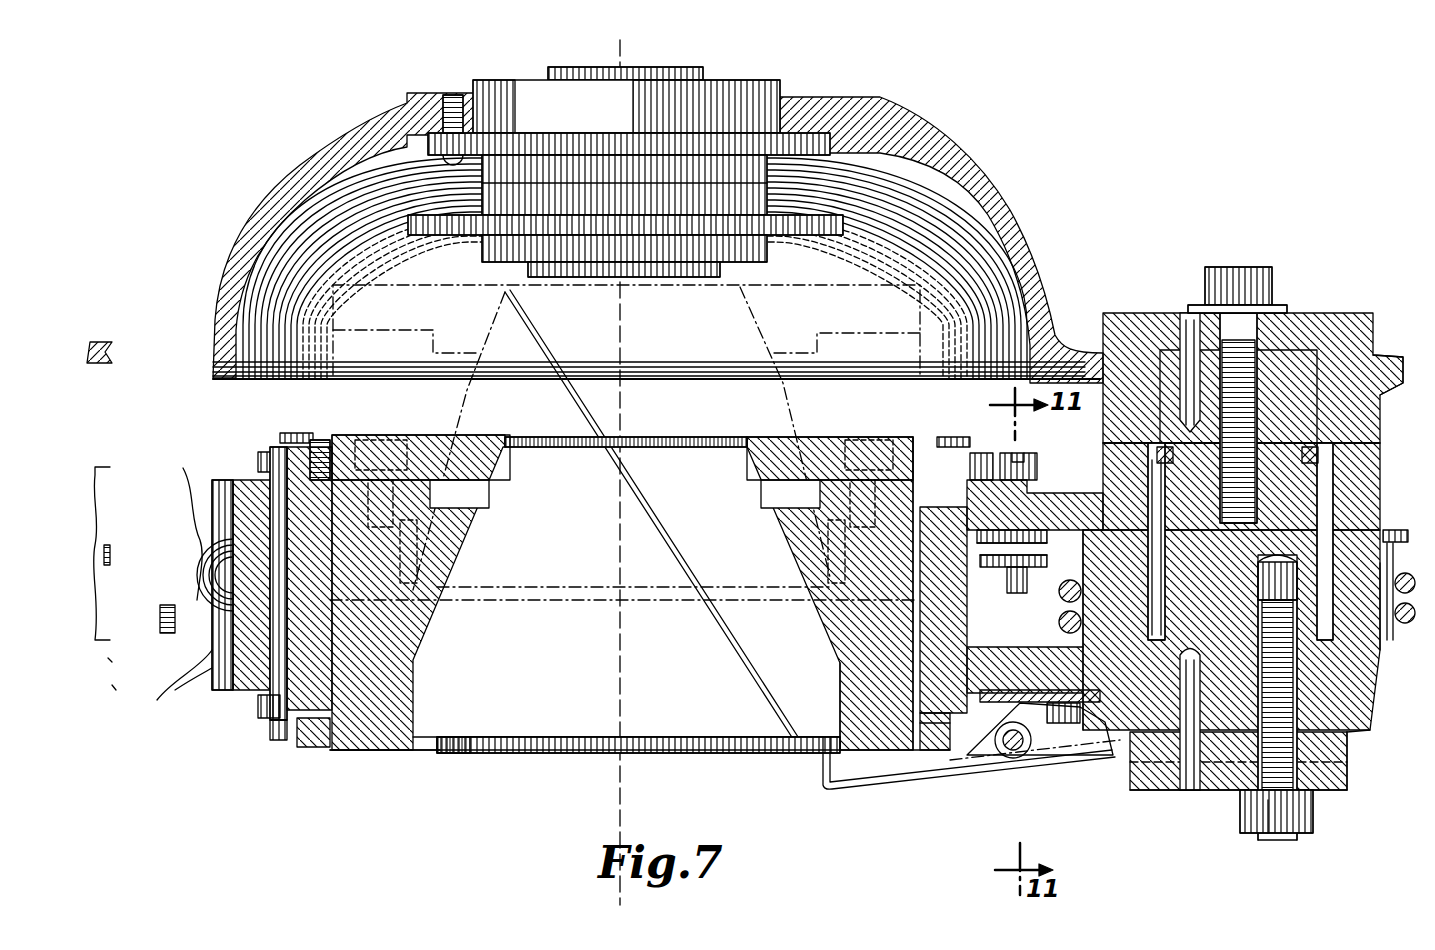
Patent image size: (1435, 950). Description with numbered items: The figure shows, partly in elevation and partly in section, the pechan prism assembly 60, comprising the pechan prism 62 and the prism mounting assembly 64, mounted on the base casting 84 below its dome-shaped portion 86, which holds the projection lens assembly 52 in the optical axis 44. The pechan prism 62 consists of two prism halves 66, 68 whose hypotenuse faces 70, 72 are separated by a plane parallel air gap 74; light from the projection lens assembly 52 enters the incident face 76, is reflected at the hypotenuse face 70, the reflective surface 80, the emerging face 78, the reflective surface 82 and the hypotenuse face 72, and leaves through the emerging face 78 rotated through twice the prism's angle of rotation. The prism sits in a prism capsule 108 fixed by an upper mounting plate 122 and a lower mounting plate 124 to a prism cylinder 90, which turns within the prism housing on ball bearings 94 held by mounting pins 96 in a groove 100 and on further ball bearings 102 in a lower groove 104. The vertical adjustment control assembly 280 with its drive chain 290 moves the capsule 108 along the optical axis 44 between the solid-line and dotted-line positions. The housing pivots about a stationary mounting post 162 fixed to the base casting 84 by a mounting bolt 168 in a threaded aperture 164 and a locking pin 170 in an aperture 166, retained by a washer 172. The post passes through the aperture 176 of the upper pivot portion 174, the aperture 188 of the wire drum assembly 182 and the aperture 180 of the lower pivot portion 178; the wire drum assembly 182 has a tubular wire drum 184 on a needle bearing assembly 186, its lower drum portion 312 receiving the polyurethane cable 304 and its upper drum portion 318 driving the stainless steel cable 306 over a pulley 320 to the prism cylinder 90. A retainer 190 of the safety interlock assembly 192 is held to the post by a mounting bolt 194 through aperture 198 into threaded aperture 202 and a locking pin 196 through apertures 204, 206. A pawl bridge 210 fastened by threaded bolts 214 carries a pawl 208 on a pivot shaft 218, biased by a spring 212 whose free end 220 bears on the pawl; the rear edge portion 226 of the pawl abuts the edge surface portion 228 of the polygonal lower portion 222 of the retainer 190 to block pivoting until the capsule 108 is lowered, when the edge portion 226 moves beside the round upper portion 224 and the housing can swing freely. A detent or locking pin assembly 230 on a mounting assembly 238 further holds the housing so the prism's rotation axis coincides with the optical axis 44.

The optical axis 44 is at (580, 408).
The projection lens assembly 52 is at (770, 165).
The pechan prism assembly 60 is at (400, 797).
The pechan prism 62 is at (588, 662).
The prism mounting assembly 64 is at (1153, 862).
The pechan prism half 66 is at (700, 437).
The pechan prism half 68 is at (460, 753).
The hypotenuse face 70 is at (712, 655).
The hypotenuse face 72 is at (695, 628).
The plane parallel air gap 74 is at (745, 740).
The incident face 76 is at (642, 437).
The emerging face 78 is at (540, 753).
The silvered or reflective surface 80 is at (762, 437).
The silvered or reflective surface 82 is at (480, 435).
The base casting 84 is at (100, 340).
The dome-shaped portion 86 is at (975, 190).
The prism cylinder 90 is at (260, 690).
The ball bearings 94 is at (980, 453).
The ball bearing mounting pins 96 is at (945, 437).
The circumferential recess or groove 100 is at (318, 440).
The ball bearings 102 is at (262, 718).
The lower recess or groove 104 is at (278, 740).
The prism capsule 108 is at (355, 750).
The upper mounting plate 122 is at (250, 480).
The lower mounting plate 124 is at (310, 747).
The stationary mounting post 162 is at (1305, 405).
The threaded aperture 164 is at (1295, 380).
The aperture 166 is at (1183, 335).
The mounting bolt 168 is at (1240, 268).
The locking pin 170 is at (1185, 315).
The washer 172 is at (1280, 306).
The upper apertured pivot portion 174 is at (1373, 447).
The centrally disposed aperture 176 is at (1370, 470).
The lower apertured pivot portion 178 is at (1372, 700).
The centrally disposed aperture 180 is at (1348, 740).
The rotatable wire drum assembly 182 is at (1372, 746).
The tubular wire drum 184 is at (1390, 720).
The needle bearing assembly 186 is at (1080, 560).
The centrally disposed aperture 188 is at (1095, 520).
The retainer 190 is at (1350, 778).
The safety interlock assembly 192 is at (988, 845).
The threaded mounting bolt 194 is at (1275, 800).
The locking pin 196 is at (1190, 792).
The aperture 198 is at (1313, 812).
The threaded aperture 202 is at (1265, 582).
The aperture 204 is at (1200, 790).
The aperture 206 is at (1192, 650).
The spring-biased rotatable pawl 208 is at (830, 790).
The pawl bridge 210 is at (985, 760).
The spring 212 is at (1010, 755).
The threaded bolts 214 is at (1085, 760).
The elongated pivot shaft 218 is at (1020, 760).
The free end 220 is at (1060, 725).
The lower polygonally-shaped portion 222 is at (1350, 790).
The upper circularly-shaped portion 224 is at (1350, 762).
The rear longitudinally extending edge portion 226 is at (1156, 735).
The edge surface portion 228 is at (1125, 775).
The detent or locking pin assembly 230 is at (88, 556).
The mounting assembly 238 is at (108, 467).
The longitudinal or vertical adjustment control assembly 280 is at (828, 424).
The stainless steel drive chain 290 is at (322, 447).
The polyurethane cable 304 is at (1058, 628).
The plastic coated stainless steel cable 306 is at (1398, 552).
The lower drum portion 312 is at (1060, 560).
The upper drum portion 318 is at (1395, 530).
The pulley 320 is at (1020, 480).